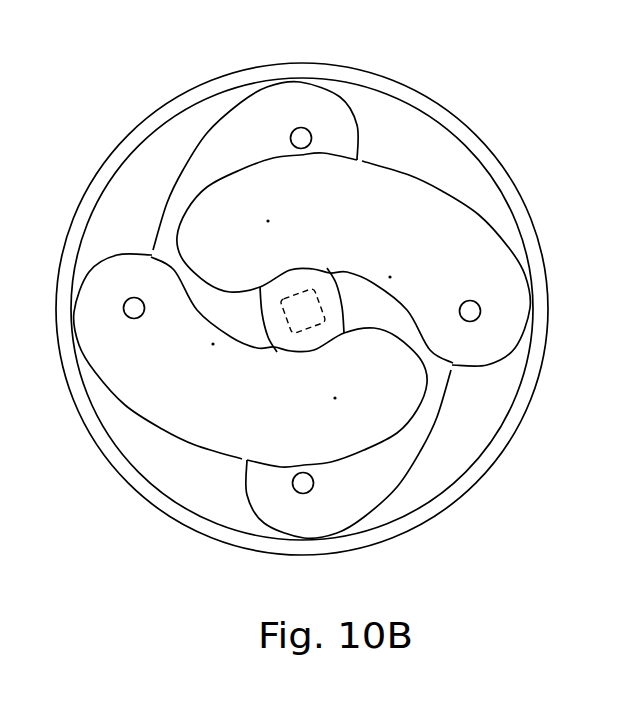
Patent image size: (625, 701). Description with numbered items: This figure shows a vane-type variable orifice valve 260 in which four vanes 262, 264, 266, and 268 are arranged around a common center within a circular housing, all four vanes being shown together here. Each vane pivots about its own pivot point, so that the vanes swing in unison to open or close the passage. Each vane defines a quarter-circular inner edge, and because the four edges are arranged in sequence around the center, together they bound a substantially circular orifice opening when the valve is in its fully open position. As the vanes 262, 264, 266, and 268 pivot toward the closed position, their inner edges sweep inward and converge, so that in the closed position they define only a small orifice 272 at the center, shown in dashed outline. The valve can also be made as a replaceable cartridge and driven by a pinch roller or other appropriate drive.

The rotary blade assembly 260 is at (490, 84).
The vane 262 is at (228, 143).
The vane 264 is at (135, 367).
The vane 266 is at (376, 470).
The vane 268 is at (447, 238).
The small orifice 272 is at (313, 290).